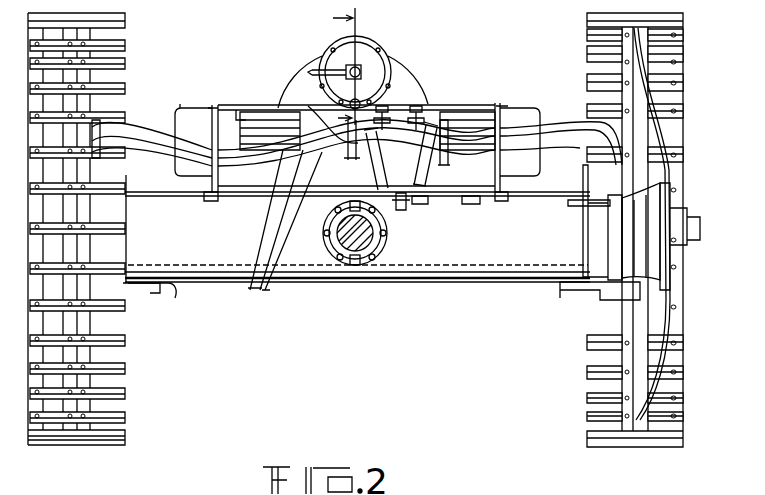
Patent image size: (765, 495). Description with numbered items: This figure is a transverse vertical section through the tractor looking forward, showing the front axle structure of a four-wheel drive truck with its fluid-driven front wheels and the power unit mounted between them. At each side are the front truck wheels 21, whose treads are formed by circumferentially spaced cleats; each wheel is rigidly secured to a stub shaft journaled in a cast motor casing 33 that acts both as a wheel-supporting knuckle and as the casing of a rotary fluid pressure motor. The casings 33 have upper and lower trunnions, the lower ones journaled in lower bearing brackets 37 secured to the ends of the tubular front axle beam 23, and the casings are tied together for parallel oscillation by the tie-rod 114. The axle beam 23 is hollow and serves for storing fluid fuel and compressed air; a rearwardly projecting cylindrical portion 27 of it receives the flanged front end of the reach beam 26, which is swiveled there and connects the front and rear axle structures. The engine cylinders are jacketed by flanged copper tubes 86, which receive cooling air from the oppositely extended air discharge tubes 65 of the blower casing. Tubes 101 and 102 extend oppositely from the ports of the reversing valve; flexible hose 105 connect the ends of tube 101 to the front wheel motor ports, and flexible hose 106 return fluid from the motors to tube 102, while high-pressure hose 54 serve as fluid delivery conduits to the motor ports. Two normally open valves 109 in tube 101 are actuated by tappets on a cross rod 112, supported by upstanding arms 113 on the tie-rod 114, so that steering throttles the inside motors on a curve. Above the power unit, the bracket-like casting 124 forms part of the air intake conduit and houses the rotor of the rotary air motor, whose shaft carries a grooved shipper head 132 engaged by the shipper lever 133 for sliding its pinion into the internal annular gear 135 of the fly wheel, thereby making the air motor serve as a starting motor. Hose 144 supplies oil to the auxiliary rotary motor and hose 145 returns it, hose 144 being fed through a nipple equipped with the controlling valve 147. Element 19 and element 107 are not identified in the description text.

The shaft / axis line 19 is at (356, 118).
The front truck wheels 21 is at (126, 44).
The tubular front axle beam 23 is at (468, 270).
The reach beam 26 is at (348, 240).
The rearwardly projecting cylindrical portion 27 is at (384, 243).
The motor casings 33 is at (646, 276).
The lower bearing brackets 37 is at (160, 292).
The flexible high-pressure hose 54 is at (426, 202).
The air discharge tubes 65 is at (176, 120).
The flanged copper tubes 86 is at (236, 110).
The tubes 101 is at (326, 125).
The tubes 102 is at (416, 178).
The flexible tubes or hose 105 is at (207, 152).
The flexible pipe tubes or hose 106 is at (176, 152).
The fitting 107 is at (400, 208).
The normally open valves 109 is at (416, 108).
The cross rod 112 is at (266, 110).
The upstanding arms 113 is at (186, 101).
The tie-rod 114 is at (534, 196).
The supplemental bracket-like casting 124 is at (378, 52).
The grooved shipper head 132 is at (362, 71).
The shipper lever 133 is at (328, 72).
The internal annular gear 135 is at (412, 80).
The flexible pipe or hose 144 is at (254, 292).
The flexible pipe or hose 145 is at (264, 296).
The controlling valve 147 is at (384, 112).